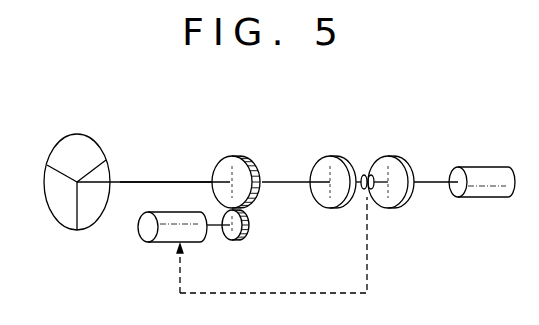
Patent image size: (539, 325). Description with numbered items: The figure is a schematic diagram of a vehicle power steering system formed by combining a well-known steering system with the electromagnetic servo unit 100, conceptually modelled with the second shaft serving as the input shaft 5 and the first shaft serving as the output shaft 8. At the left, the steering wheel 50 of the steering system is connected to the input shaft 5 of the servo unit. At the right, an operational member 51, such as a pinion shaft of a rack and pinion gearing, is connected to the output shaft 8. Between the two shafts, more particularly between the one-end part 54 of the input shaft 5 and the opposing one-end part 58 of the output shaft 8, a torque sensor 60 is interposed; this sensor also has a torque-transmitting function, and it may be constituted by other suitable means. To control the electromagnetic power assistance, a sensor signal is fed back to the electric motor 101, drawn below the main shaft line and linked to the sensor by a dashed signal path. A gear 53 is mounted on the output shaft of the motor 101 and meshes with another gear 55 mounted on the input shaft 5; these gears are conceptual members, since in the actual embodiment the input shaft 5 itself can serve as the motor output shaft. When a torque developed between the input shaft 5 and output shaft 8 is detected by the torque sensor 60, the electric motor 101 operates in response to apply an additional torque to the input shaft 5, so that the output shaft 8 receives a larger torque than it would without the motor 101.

The electromagnetic servo unit 100 is at (268, 114).
The steering wheel 50 is at (77, 134).
The input shaft 5 is at (164, 181).
The gear 55 is at (238, 156).
The gear 53 is at (250, 236).
The electric motor 101 is at (167, 234).
The one-end part 54 is at (328, 156).
The torque sensor 60 is at (367, 174).
The one-end part 58 is at (403, 206).
The output shaft 8 is at (437, 181).
The operational member 51 is at (486, 192).